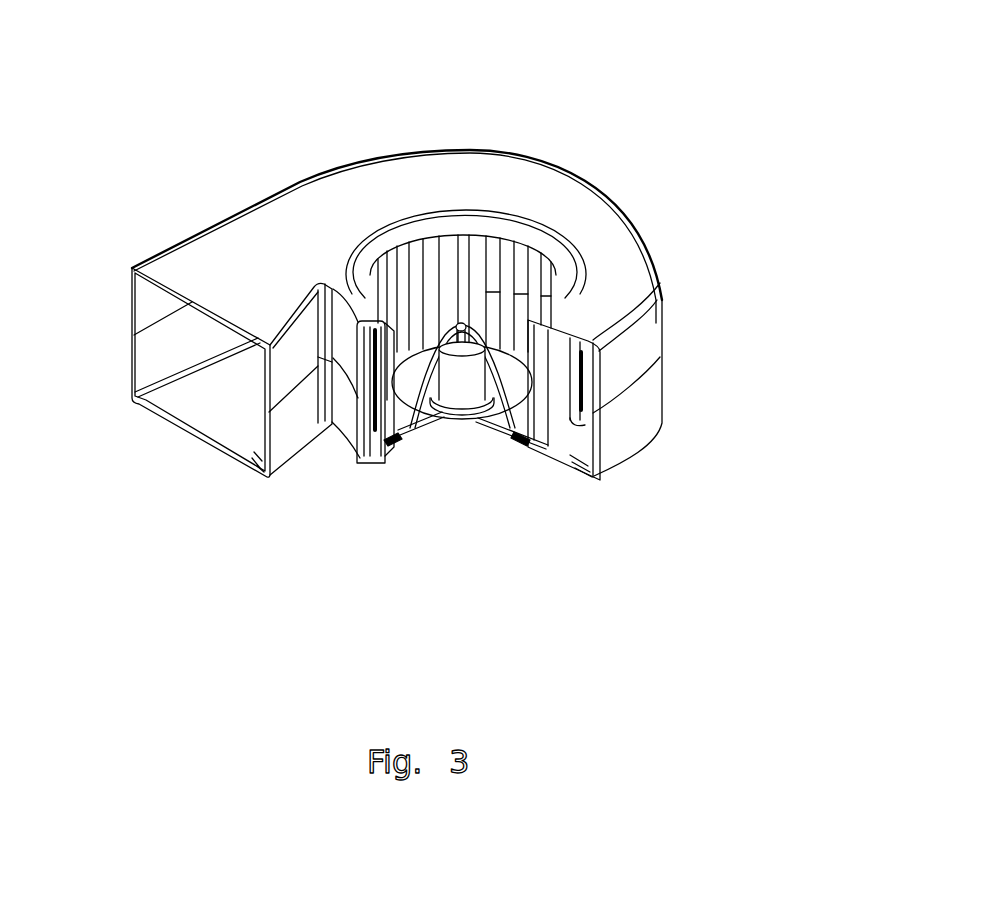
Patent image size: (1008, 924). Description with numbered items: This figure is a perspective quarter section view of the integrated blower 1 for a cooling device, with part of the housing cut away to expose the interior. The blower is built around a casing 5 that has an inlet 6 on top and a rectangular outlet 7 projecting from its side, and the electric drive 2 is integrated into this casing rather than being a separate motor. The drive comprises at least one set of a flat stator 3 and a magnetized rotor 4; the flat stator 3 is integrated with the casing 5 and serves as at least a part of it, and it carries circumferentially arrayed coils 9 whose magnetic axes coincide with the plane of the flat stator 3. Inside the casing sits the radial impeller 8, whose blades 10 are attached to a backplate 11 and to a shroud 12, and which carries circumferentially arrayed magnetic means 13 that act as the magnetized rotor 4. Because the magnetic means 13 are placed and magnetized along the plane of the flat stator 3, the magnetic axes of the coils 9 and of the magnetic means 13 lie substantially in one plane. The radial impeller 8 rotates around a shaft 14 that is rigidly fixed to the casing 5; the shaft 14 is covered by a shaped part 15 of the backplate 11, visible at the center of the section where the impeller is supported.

The integrated blower 1 is at (771, 96).
The electric drive 2 is at (508, 432).
The flat stator 3 is at (367, 460).
The magnetized rotor 4 is at (396, 440).
The casing 5 is at (185, 270).
The inlet 6 is at (453, 236).
The outlet 7 is at (212, 412).
The radial impeller 8 is at (495, 265).
The coils 9 is at (540, 462).
The blades 10 is at (380, 267).
The backplate 11 is at (517, 428).
The shroud 12 is at (522, 213).
The magnetic means 13 is at (504, 420).
The shaft 14 is at (457, 390).
The shaped part 15 is at (504, 380).